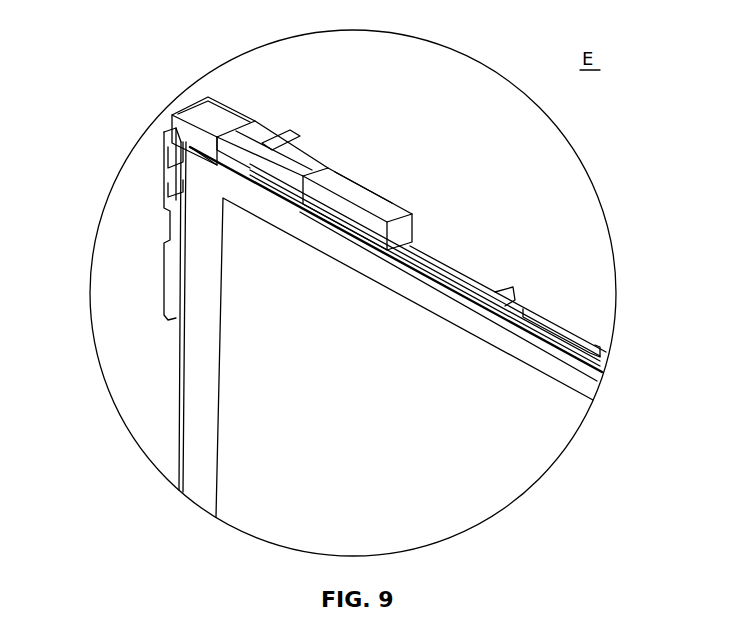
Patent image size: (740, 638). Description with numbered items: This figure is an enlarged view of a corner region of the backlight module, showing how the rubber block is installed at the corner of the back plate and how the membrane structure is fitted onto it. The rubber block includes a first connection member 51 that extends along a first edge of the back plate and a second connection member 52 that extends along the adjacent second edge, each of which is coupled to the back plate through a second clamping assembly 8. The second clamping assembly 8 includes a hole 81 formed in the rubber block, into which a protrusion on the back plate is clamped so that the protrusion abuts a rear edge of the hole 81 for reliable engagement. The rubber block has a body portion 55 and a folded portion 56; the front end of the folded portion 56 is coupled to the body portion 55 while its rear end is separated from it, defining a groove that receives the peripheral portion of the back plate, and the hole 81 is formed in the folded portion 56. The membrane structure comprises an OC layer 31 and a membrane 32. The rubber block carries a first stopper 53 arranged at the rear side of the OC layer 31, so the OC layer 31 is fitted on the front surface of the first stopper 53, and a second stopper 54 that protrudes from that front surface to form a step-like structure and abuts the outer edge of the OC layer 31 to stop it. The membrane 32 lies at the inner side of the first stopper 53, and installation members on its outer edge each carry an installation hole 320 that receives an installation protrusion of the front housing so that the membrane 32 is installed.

The second clamping assembly 8 is at (244, 105).
The hole 81 is at (253, 127).
The OC layer 31 is at (453, 310).
The membrane 32 is at (485, 264).
The installation hole 320 is at (560, 321).
The first connection member 51 is at (205, 106).
The second connection member 52 is at (162, 243).
The first stopper 53 is at (400, 245).
The second stopper 54 is at (168, 131).
The body portion 55 is at (317, 160).
The folded portion 56 is at (277, 140).